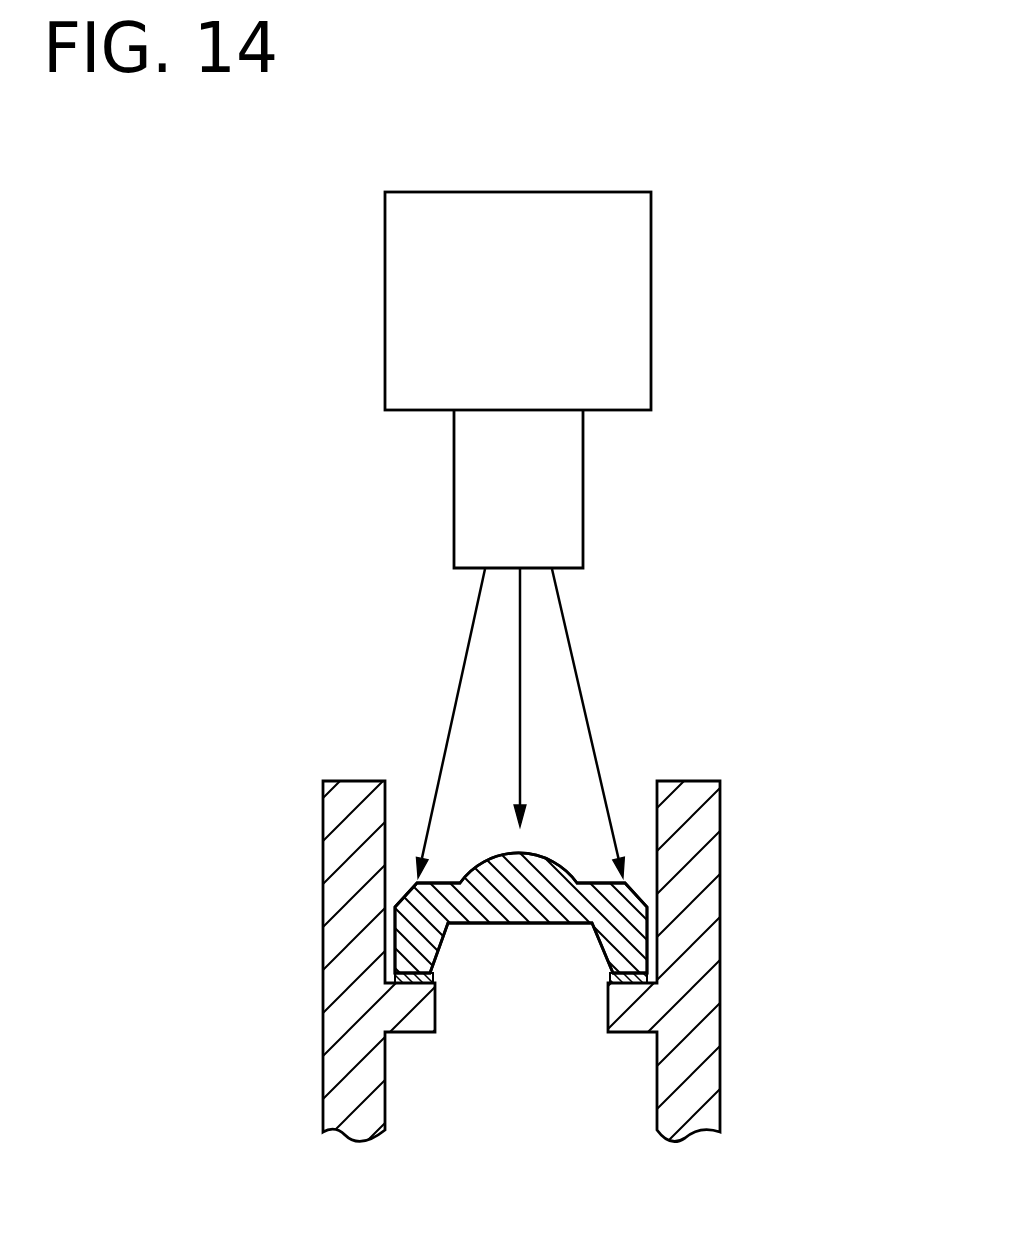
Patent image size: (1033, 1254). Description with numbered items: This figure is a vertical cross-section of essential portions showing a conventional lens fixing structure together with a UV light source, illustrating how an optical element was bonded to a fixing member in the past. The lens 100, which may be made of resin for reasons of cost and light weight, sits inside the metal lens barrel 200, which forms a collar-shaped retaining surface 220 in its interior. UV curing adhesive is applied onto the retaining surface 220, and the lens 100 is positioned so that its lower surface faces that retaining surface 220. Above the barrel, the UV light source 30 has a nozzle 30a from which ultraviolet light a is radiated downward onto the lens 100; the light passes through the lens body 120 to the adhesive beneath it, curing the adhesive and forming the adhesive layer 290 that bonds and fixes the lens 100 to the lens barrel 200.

The UV light source 30 is at (651, 285).
The nozzle 30a is at (583, 485).
The light beam a is at (520, 613).
The lens barrel 200 is at (742, 933).
The lens portion 120 is at (633, 960).
The lens 100 is at (523, 932).
The adhesive layer 290 is at (435, 983).
The retaining surface 220 is at (597, 977).